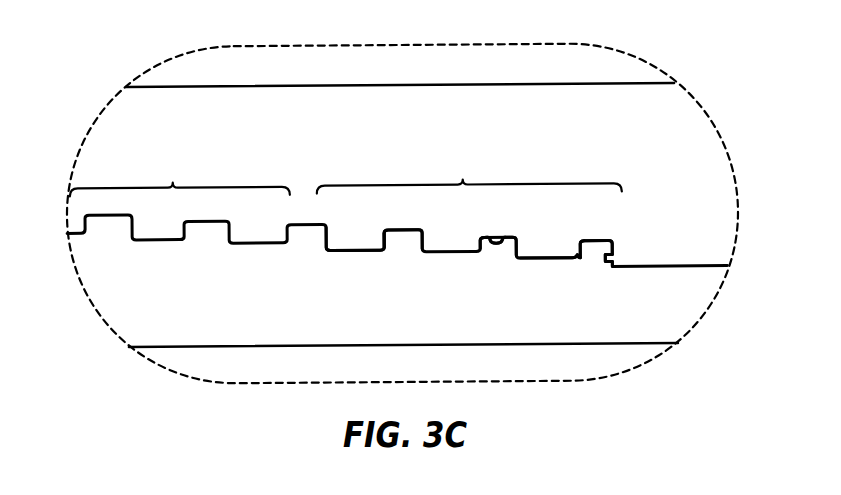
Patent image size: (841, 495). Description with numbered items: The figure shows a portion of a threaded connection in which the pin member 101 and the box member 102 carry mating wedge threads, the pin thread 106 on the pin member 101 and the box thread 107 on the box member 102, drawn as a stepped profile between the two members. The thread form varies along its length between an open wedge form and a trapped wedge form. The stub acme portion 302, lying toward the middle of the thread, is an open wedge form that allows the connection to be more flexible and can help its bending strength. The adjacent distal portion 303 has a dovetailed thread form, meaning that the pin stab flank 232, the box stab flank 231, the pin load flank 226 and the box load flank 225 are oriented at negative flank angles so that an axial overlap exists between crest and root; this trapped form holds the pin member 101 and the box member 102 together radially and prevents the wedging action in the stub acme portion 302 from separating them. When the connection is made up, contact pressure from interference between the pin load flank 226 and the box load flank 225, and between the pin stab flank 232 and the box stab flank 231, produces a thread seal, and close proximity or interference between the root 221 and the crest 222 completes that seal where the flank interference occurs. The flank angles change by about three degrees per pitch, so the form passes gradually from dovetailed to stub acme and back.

The pin member 101 is at (205, 300).
The box member 102 is at (656, 146).
The pin thread 106 is at (308, 237).
The box thread 107 is at (352, 237).
The root 221 is at (488, 237).
The crest 222 is at (504, 236).
The box load flank 225 is at (584, 249).
The pin load flank 226 is at (576, 259).
The box stab flank 231 is at (613, 260).
The pin stab flank 232 is at (613, 251).
The stub acme portion 302 is at (180, 173).
The distal portion 303 is at (469, 169).